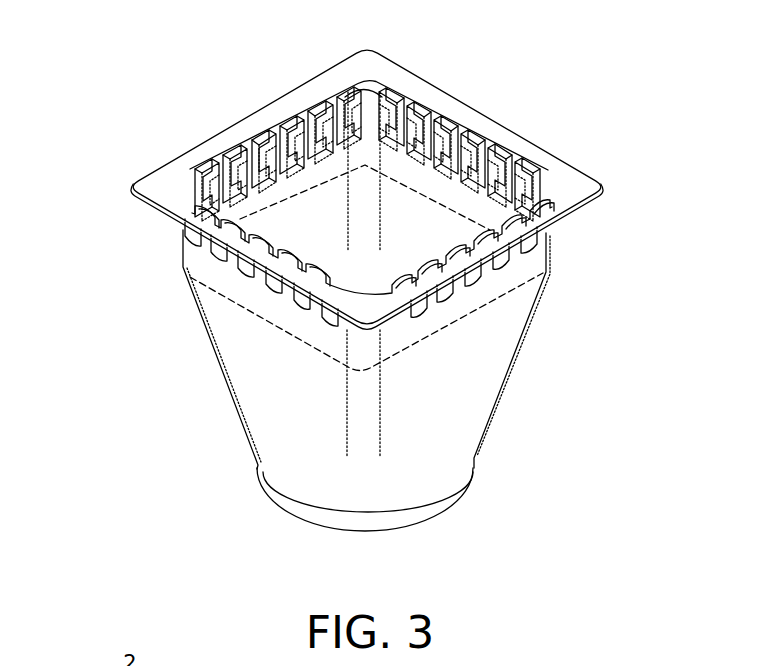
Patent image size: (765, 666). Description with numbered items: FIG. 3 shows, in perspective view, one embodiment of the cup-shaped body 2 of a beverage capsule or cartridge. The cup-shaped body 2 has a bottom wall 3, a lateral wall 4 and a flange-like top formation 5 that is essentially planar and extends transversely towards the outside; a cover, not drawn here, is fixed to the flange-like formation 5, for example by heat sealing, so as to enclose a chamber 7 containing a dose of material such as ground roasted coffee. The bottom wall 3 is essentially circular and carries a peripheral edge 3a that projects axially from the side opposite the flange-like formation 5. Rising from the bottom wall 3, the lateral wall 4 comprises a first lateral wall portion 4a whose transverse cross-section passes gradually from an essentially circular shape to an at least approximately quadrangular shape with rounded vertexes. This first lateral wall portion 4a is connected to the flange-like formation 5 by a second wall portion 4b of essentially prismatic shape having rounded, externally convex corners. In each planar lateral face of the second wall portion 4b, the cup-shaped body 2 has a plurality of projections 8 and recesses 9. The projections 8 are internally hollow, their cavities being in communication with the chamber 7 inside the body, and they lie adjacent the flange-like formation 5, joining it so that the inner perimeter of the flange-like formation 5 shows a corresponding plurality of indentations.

The cup-shaped body 2 is at (494, 104).
The bottom wall 3 is at (392, 528).
The peripheral edge 3a is at (295, 507).
The lateral wall 4 is at (500, 348).
The first lateral wall portion 4a is at (215, 360).
The second wall portion 4b is at (184, 249).
The flange-like top formation 5 is at (148, 190).
The chamber 7 is at (323, 212).
The projections 8 is at (235, 257).
The recesses 9 is at (547, 273).